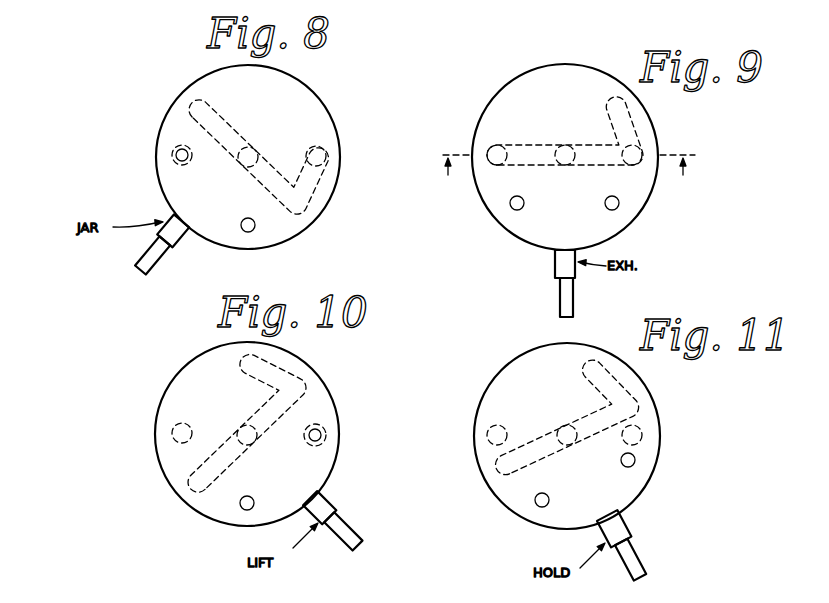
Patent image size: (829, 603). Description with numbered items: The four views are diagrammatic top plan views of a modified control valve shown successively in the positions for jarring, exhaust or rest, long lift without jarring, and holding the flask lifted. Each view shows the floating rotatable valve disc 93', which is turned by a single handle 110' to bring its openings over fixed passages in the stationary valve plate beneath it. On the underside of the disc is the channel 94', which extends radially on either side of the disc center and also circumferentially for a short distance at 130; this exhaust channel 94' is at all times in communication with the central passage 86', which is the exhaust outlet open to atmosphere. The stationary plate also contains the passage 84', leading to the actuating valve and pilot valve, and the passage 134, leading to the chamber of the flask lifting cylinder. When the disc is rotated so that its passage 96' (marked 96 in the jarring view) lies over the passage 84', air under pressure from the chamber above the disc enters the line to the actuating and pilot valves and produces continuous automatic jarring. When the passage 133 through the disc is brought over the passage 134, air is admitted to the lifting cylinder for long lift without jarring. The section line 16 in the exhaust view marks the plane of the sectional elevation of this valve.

In FIG. 9, the section line 16 is at (573, 160).
In FIG. 8, the passage 84' is at (141, 151).
In FIG. 9, the passage 84' is at (469, 131).
In FIG. 10, the passage 84' is at (143, 428).
In FIG. 11, the passage 84' is at (468, 437).
In FIG. 8, the central passage 86' is at (262, 134).
In FIG. 9, the central passage 86' is at (566, 129).
In FIG. 10, the central passage 86' is at (228, 416).
In FIG. 11, the central passage 86' is at (562, 409).
In FIG. 8, the floating rotatable valve disc 93' is at (258, 157).
In FIG. 9, the floating rotatable valve disc 93' is at (565, 157).
In FIG. 10, the floating rotatable valve disc 93' is at (247, 434).
In FIG. 11, the floating rotatable valve disc 93' is at (567, 436).
In FIG. 8, the channel 94' is at (156, 106).
In FIG. 9, the channel 94' is at (496, 99).
In FIG. 10, the channel 94' is at (153, 481).
In FIG. 11, the channel 94' is at (526, 424).
In FIG. 8, the opening 96 is at (150, 170).
In FIG. 9, the passage 96' is at (499, 230).
In FIG. 10, the passage 96' is at (218, 526).
In FIG. 11, the passage 96' is at (518, 523).
In FIG. 8, the handle 110' is at (165, 257).
In FIG. 9, the handle 110' is at (536, 286).
In FIG. 10, the handle 110' is at (359, 520).
In FIG. 11, the handle 110' is at (659, 545).
In FIG. 8, the circumferential extension of channel 130 is at (312, 188).
In FIG. 9, the circumferential extension of channel 130 is at (620, 120).
In FIG. 10, the circumferential extension of channel 130 is at (287, 358).
In FIG. 11, the circumferential extension of channel 130 is at (602, 380).
In FIG. 8, the passage 133 is at (250, 232).
In FIG. 9, the passage 133 is at (618, 209).
In FIG. 10, the passage 133 is at (321, 432).
In FIG. 11, the passage 133 is at (634, 465).
In FIG. 8, the passage 134 is at (326, 155).
In FIG. 9, the passage 134 is at (638, 163).
In FIG. 10, the passage 134 is at (324, 444).
In FIG. 11, the passage 134 is at (643, 435).